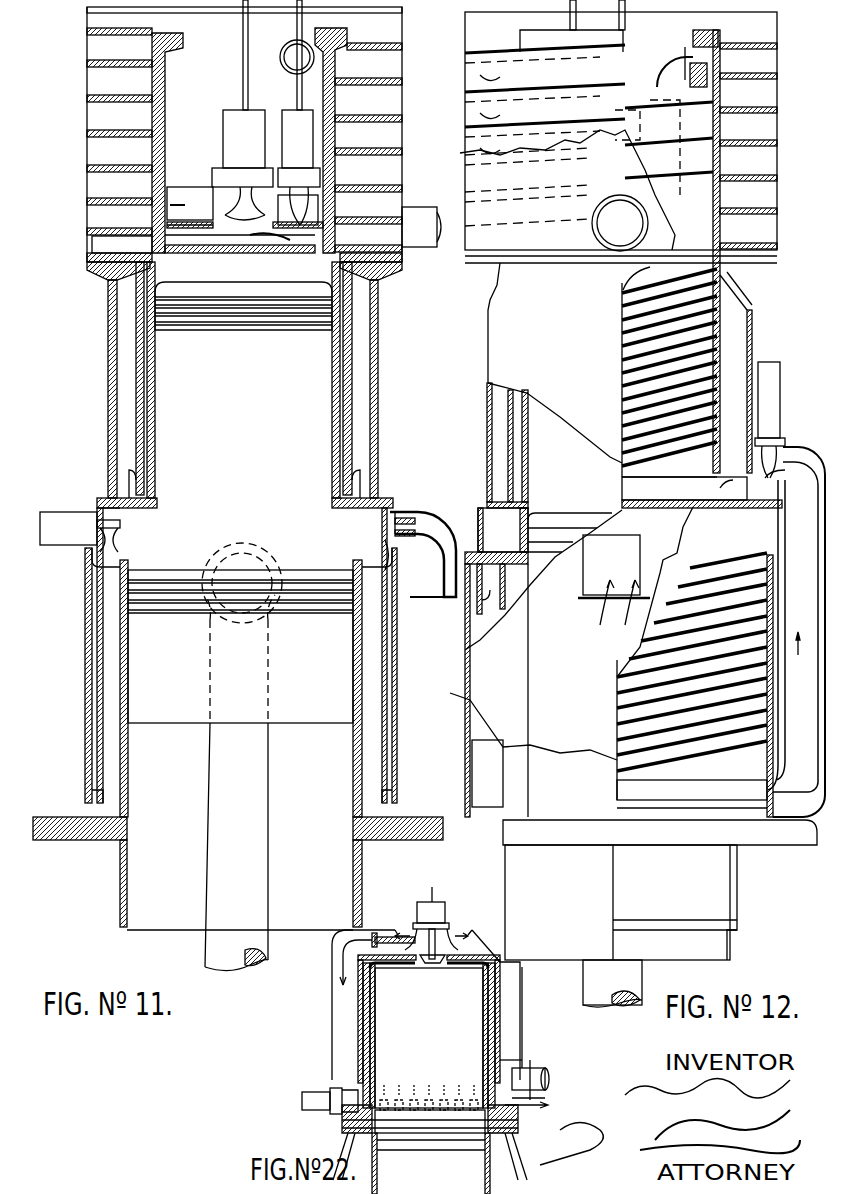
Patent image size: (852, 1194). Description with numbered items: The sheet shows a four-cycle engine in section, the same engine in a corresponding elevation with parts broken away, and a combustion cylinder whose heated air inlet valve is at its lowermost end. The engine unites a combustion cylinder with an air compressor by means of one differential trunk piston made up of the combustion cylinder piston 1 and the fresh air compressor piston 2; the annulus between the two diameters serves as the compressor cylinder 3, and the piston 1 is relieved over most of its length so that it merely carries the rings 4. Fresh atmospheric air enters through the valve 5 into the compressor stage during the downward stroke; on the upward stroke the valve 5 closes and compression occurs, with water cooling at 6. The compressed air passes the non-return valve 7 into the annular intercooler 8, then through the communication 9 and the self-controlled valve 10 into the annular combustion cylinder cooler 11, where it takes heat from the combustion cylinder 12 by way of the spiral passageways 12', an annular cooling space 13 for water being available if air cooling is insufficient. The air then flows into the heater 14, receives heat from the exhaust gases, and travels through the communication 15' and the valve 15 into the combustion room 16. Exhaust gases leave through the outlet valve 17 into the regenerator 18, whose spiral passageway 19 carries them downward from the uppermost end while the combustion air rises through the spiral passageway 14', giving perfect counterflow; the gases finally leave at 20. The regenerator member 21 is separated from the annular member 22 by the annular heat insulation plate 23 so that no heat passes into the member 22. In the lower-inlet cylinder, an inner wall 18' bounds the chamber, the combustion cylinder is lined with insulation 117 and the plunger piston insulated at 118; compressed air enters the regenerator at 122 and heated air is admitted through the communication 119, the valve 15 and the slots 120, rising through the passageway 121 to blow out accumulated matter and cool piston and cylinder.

In FIG. 11, the combustion cylinder piston 1 is at (193, 290).
In FIG. 11, the fresh air compressor piston 2 is at (145, 585).
In FIG. 12, the compressor cylinder 3 is at (517, 770).
In FIG. 11, the rings 4 is at (190, 320).
In FIG. 11, the valve 5 is at (388, 508).
In FIG. 11, the water cooling 6 is at (112, 745).
In FIG. 11, the non-return valve 7 is at (103, 517).
In FIG. 11, the annular intercooler 8 is at (95, 617).
In FIG. 12, the communication 9 is at (803, 845).
In FIG. 12, the self-controlled valve 10 is at (785, 445).
In FIG. 11, the annular combustion cylinder cooler 11 is at (340, 457).
In FIG. 12, the annular combustion cylinder cooler 11 is at (728, 467).
In FIG. 11, the combustion cylinder 12 is at (294, 380).
In FIG. 12, the spiral passageways 12' is at (732, 372).
In FIG. 11, the annular cooling space 13 is at (360, 332).
In FIG. 12, the annular cooling space 13 is at (732, 307).
In FIG. 11, the heater 14 is at (369, 112).
In FIG. 12, the spiral passageway 14' is at (651, 175).
In FIG. 22, the spiral passageway 14' is at (386, 1019).
In FIG. 11, the valve 15 is at (355, 183).
In FIG. 22, the valve 15 is at (315, 1117).
In FIG. 12, the communication 15' is at (742, 251).
In FIG. 11, the combustion room 16 is at (215, 272).
In FIG. 22, the combustion room 16 is at (473, 975).
In FIG. 11, the outlet valve 17 is at (243, 220).
In FIG. 22, the outlet valve 17 is at (440, 947).
In FIG. 12, the regenerator 18 is at (597, 131).
In FIG. 22, the inner wall 18' is at (461, 1035).
In FIG. 12, the spiral passageway 19 is at (467, 72).
In FIG. 11, the exhaust outlet 20 is at (412, 237).
In FIG. 11, the regenerator member 21 is at (105, 245).
In FIG. 11, the annular member 22 is at (87, 258).
In FIG. 11, the annular heat insulation plate 23 is at (100, 235).
In FIG. 22, the heat insulating lining 117 is at (393, 1005).
In FIG. 22, the piston insulation 118 is at (393, 1005).
In FIG. 22, the communication 119 is at (335, 1038).
In FIG. 22, the slots 120 is at (480, 1098).
In FIG. 22, the passageway 121 is at (483, 1035).
In FIG. 22, the air inlet 122 is at (548, 1073).